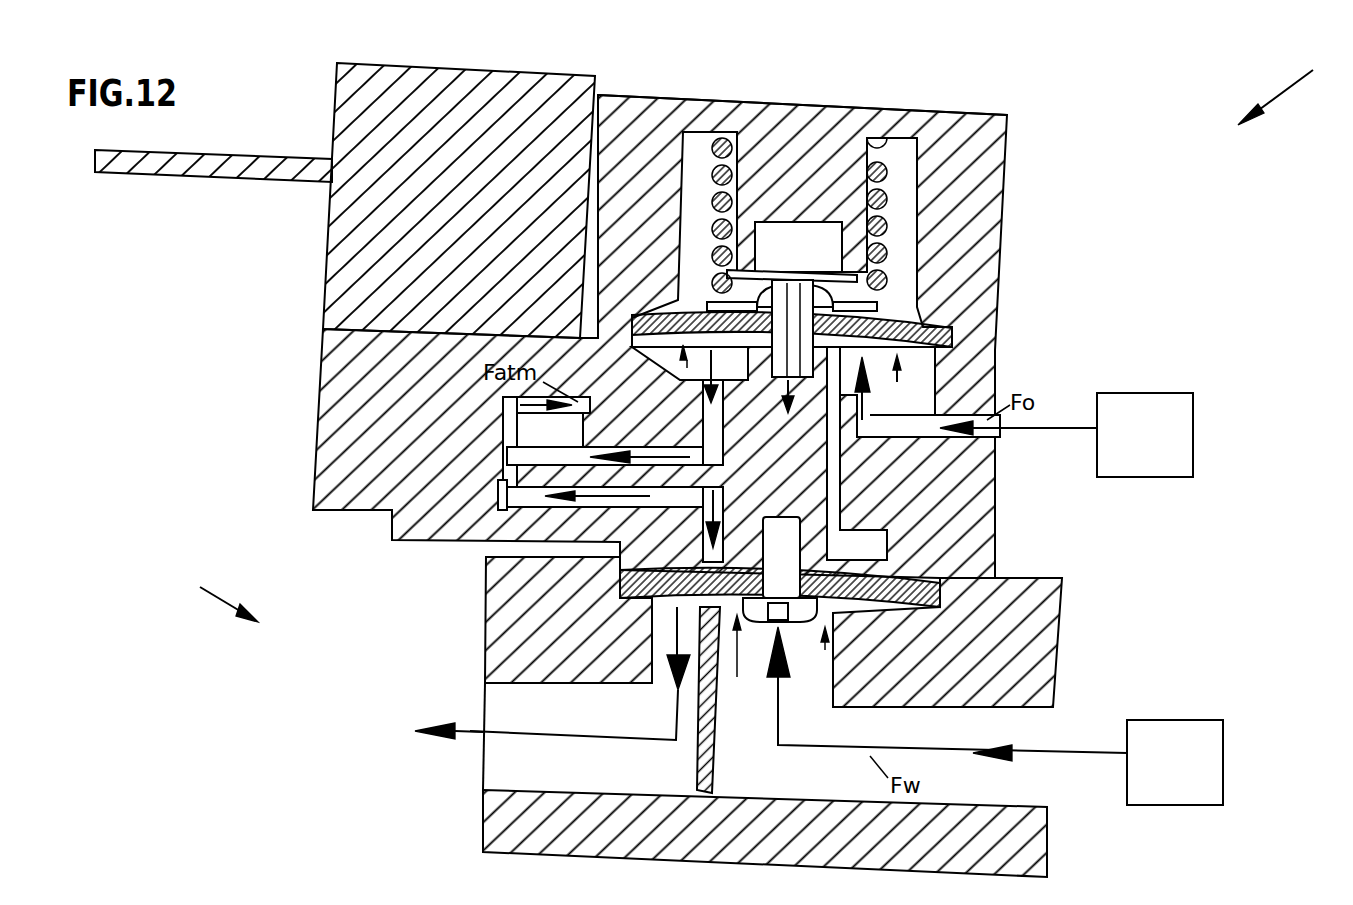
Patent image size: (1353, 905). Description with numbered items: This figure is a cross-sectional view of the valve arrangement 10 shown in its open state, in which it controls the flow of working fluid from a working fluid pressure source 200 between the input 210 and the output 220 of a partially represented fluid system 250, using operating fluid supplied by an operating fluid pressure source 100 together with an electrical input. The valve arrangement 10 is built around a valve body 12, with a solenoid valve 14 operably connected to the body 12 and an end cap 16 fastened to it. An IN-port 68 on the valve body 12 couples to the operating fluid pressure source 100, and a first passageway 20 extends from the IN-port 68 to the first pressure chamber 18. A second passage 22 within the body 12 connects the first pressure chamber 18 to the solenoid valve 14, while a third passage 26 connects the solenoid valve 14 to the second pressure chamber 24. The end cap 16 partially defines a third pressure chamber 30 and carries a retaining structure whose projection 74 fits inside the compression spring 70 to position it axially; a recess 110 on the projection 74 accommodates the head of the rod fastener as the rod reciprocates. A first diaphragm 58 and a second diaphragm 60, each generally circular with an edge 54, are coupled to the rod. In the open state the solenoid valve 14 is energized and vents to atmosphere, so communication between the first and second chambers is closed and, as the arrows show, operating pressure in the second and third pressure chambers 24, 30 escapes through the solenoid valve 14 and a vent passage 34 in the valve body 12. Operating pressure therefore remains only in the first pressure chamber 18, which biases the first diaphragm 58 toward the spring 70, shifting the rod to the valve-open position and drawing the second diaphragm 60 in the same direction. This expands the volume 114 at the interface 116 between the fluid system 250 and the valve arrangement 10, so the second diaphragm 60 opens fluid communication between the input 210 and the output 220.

The valve arrangement 10 is at (1294, 84).
The valve body 12 is at (988, 533).
The solenoid valve 14 is at (370, 73).
The end cap 16 is at (905, 123).
The first pressure chamber 18 is at (875, 375).
The first passageway 20 is at (925, 440).
The second passage 22 is at (645, 510).
The second pressure chamber 24 is at (865, 560).
The third passage 26 is at (650, 450).
The third pressure chamber 30 is at (895, 267).
The vent passage 34 is at (595, 397).
The edge of the diaphragm 54 is at (634, 316).
The first diaphragm 58 is at (985, 345).
The second diaphragm 60 is at (920, 610).
The IN-port 68 is at (987, 443).
The spring 70 is at (735, 173).
The projection 74 is at (710, 280).
The operating fluid pressure source 100 is at (1145, 393).
The recess 110 is at (800, 214).
The volume 114 is at (673, 610).
The interface 116 is at (923, 684).
The working fluid pressure source 200 is at (1170, 720).
The input 210 is at (1047, 793).
The output 220 is at (483, 762).
The fluid system 250 is at (205, 592).